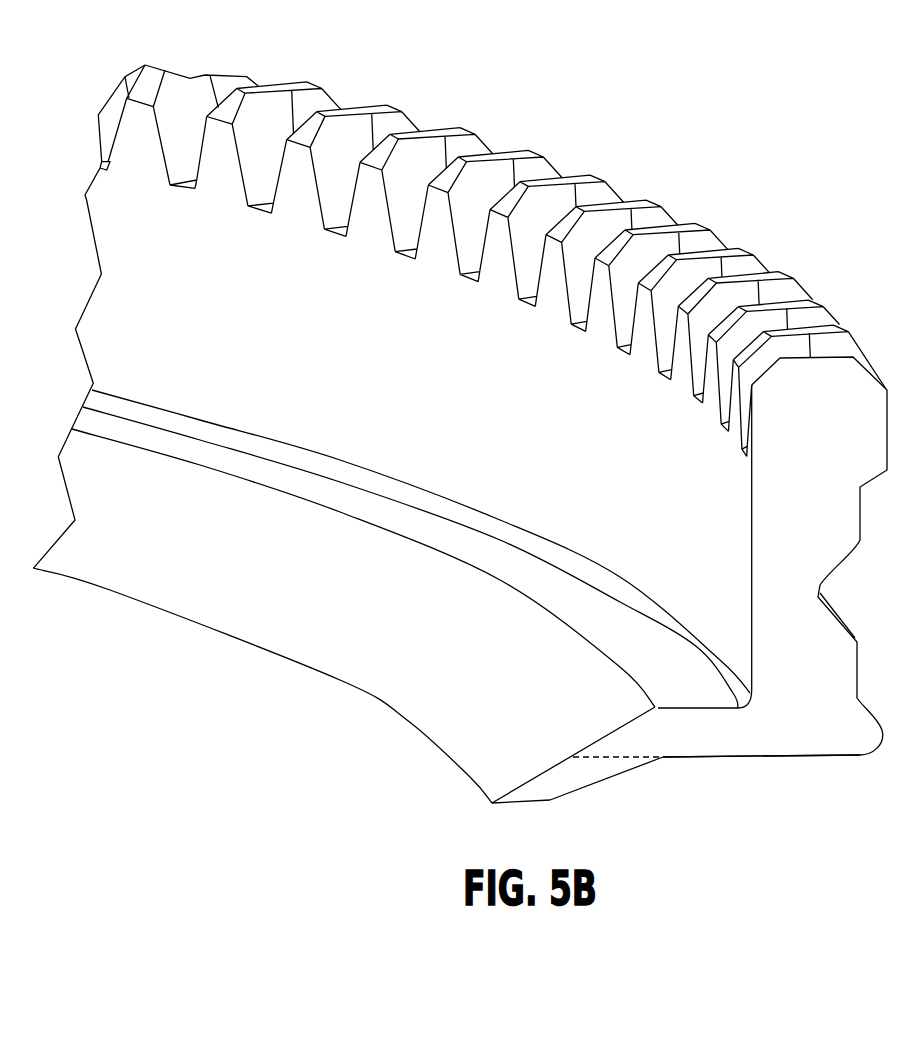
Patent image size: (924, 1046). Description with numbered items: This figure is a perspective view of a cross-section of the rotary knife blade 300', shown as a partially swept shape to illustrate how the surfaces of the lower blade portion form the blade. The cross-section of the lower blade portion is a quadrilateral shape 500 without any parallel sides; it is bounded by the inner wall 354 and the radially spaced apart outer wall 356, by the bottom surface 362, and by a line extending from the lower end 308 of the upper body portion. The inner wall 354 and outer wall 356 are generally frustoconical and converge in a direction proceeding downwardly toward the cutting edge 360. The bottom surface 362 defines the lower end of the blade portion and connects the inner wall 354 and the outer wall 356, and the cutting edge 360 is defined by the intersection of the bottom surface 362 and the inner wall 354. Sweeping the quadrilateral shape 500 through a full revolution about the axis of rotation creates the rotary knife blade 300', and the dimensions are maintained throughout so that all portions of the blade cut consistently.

The rotary knife blade 300' is at (460, 455).
The quadrilateral shape 500 is at (575, 773).
The inner wall 354 is at (537, 777).
The outer wall 356 is at (640, 767).
The cutting edge 360 is at (470, 777).
The bottom surface 362 is at (530, 804).
The lower end 308 is at (763, 757).